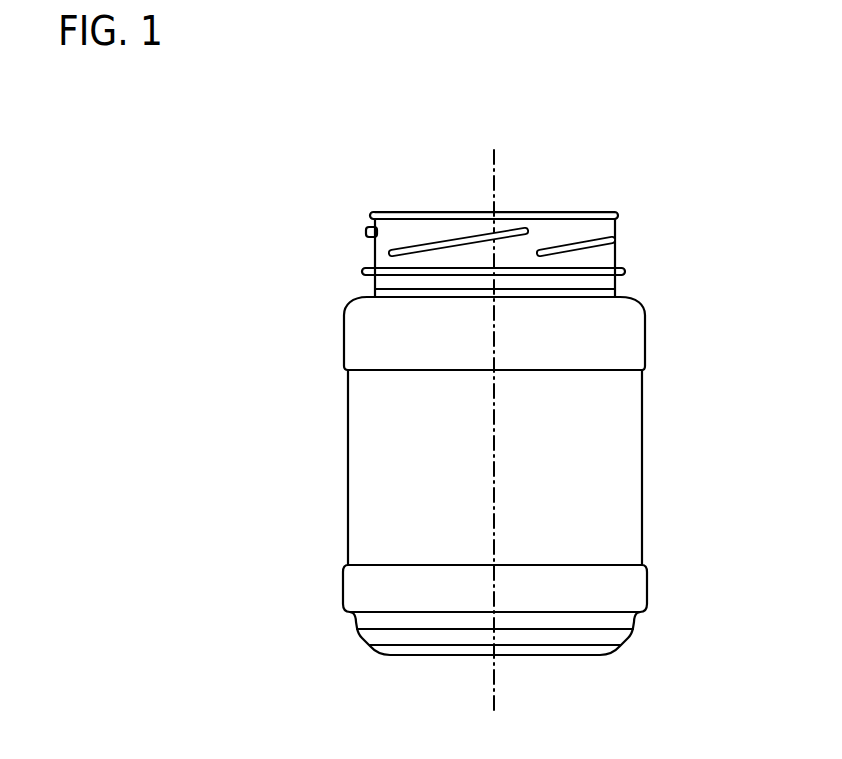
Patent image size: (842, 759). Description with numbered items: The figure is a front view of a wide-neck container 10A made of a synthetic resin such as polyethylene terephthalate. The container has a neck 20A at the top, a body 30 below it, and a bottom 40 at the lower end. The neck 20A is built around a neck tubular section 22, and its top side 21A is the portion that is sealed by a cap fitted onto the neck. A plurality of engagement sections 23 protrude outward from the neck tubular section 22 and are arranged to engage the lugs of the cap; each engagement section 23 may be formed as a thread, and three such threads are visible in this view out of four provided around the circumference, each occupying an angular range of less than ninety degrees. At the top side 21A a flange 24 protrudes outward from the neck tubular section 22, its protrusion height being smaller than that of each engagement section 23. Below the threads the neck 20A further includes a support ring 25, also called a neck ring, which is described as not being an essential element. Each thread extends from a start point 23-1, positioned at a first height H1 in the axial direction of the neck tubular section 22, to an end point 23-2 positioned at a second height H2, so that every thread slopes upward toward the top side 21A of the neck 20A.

The wide-neck container 10A is at (637, 155).
The neck 20A is at (340, 283).
The top side 21A is at (566, 212).
The neck tubular section 22 is at (447, 228).
The engagement section 23 is at (618, 240).
The start point 23-1 is at (392, 252).
The end point 23-2 is at (526, 230).
The flange 24 is at (620, 214).
The support ring 25 is at (627, 271).
The body 30 is at (627, 453).
The bottom 40 is at (522, 656).
The first height H1 is at (390, 260).
The second height H2 is at (368, 227).